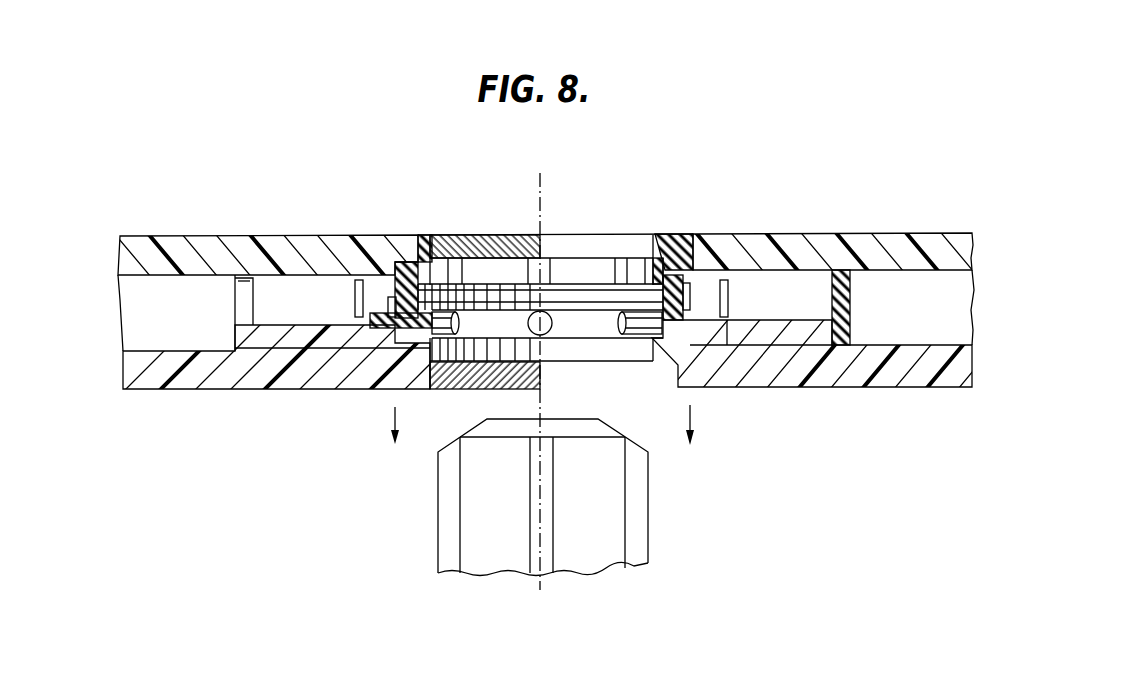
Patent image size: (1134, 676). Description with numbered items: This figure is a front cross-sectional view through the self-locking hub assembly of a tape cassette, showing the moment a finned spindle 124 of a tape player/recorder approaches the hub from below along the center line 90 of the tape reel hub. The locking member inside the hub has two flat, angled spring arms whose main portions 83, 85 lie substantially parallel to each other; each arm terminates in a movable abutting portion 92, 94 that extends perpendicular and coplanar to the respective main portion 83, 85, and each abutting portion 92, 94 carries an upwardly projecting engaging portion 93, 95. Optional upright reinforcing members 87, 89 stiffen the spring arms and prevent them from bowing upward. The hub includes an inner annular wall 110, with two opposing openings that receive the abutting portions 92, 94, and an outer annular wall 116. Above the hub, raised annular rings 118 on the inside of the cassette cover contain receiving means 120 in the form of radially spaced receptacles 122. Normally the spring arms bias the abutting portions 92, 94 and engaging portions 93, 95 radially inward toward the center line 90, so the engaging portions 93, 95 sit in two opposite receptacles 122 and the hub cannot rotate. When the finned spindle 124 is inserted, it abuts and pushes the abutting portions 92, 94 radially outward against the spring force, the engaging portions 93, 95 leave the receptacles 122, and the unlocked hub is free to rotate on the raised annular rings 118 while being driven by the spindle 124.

The main portion 83 is at (728, 320).
The main portion 85 is at (360, 322).
The reinforcing member 87 is at (355, 300).
The reinforcing member 89 is at (729, 296).
The center line 90 is at (543, 196).
The abutting portion 92 is at (618, 321).
The engaging portion 93 is at (650, 288).
The abutting portion 94 is at (459, 321).
The engaging portion 95 is at (448, 262).
The inner annular wall 110 is at (696, 301).
The outer annular wall 116 is at (235, 297).
The raised annular ring 118 is at (423, 262).
The receiving means 120 is at (407, 252).
The receptacle 122 is at (400, 268).
The finned spindle 124 is at (438, 510).